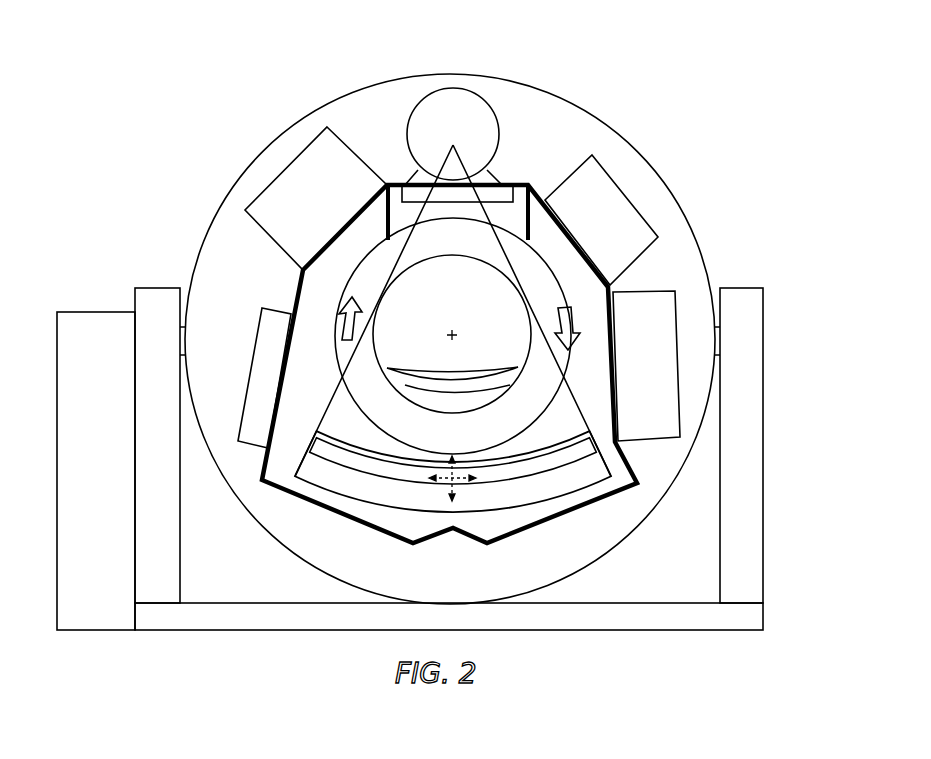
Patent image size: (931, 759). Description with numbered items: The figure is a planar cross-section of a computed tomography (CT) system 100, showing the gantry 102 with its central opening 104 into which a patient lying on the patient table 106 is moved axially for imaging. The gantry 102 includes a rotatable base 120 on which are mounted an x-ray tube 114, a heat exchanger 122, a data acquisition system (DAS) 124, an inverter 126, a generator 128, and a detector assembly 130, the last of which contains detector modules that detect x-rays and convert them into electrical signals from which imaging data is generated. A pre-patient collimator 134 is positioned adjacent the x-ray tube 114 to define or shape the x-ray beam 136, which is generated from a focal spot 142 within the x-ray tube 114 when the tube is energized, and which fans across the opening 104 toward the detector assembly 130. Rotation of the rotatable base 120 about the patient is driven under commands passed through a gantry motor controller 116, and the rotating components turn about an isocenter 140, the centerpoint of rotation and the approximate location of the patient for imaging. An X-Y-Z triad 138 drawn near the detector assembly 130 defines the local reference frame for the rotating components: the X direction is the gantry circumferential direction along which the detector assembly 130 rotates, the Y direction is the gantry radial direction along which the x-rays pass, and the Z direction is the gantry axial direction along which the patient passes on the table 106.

The computed tomography (CT) system 100 is at (642, 84).
The gantry 102 is at (212, 222).
The opening 104 is at (492, 308).
The patient table 106 is at (400, 386).
The x-ray tube 114 is at (453, 88).
The gantry motor controller 116 is at (75, 312).
The rotatable base 120 is at (275, 474).
The heat exchanger 122 is at (262, 192).
The data acquisition system (DAS) 124 is at (253, 340).
The inverter 126 is at (627, 197).
The generator 128 is at (660, 290).
The detector assembly 130 is at (565, 480).
The pre-patient collimator 134 is at (395, 195).
The x-ray beam 136 is at (573, 413).
The X-Y-Z triad 138 is at (430, 494).
The isocenter 140 is at (452, 335).
The focal spot 142 is at (453, 138).